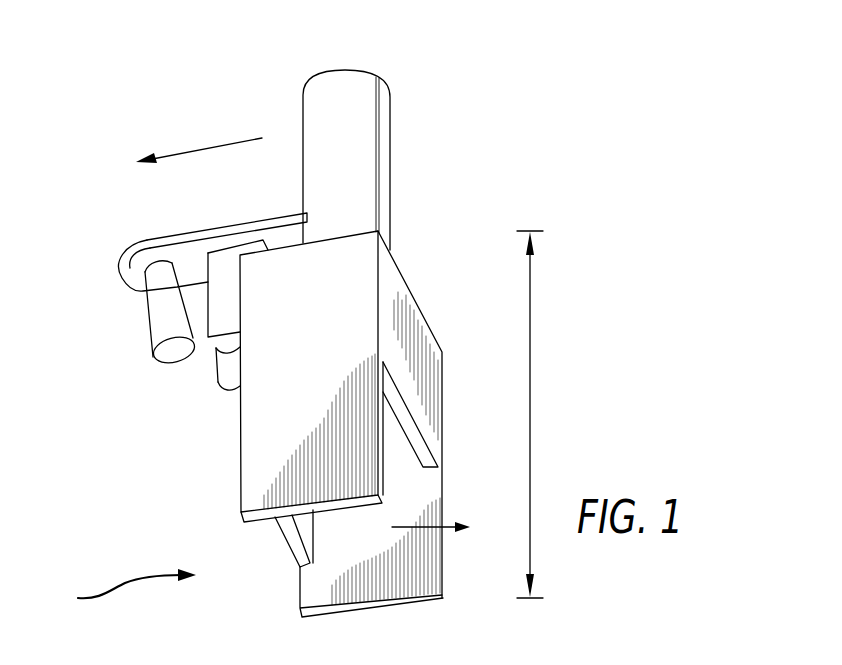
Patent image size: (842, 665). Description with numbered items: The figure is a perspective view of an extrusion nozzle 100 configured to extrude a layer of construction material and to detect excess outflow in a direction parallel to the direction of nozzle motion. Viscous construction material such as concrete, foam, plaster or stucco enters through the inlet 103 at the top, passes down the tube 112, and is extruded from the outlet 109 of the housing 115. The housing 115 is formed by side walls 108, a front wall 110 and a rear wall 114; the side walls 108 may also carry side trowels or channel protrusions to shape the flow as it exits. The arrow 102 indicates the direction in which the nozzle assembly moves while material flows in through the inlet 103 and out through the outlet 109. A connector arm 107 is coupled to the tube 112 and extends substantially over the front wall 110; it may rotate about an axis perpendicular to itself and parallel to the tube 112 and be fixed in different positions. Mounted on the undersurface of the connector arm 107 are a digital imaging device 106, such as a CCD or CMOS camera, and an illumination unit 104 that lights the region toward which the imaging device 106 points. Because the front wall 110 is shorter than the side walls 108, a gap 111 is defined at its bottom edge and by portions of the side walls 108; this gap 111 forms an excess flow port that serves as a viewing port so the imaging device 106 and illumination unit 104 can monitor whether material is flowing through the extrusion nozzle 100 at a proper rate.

The extrusion nozzle 100 is at (532, 176).
The arrow 102 is at (208, 148).
The inlet 103 is at (347, 58).
The illumination unit 104 is at (160, 300).
The digital imaging device 106 is at (217, 313).
The connector arm 107 is at (177, 233).
The side walls 108 is at (257, 440).
The outlet 109 is at (452, 529).
The front wall 110 is at (280, 532).
The gap 111 is at (116, 589).
The tube 112 is at (380, 198).
The rear wall 114 is at (430, 355).
The housing 115 is at (530, 372).